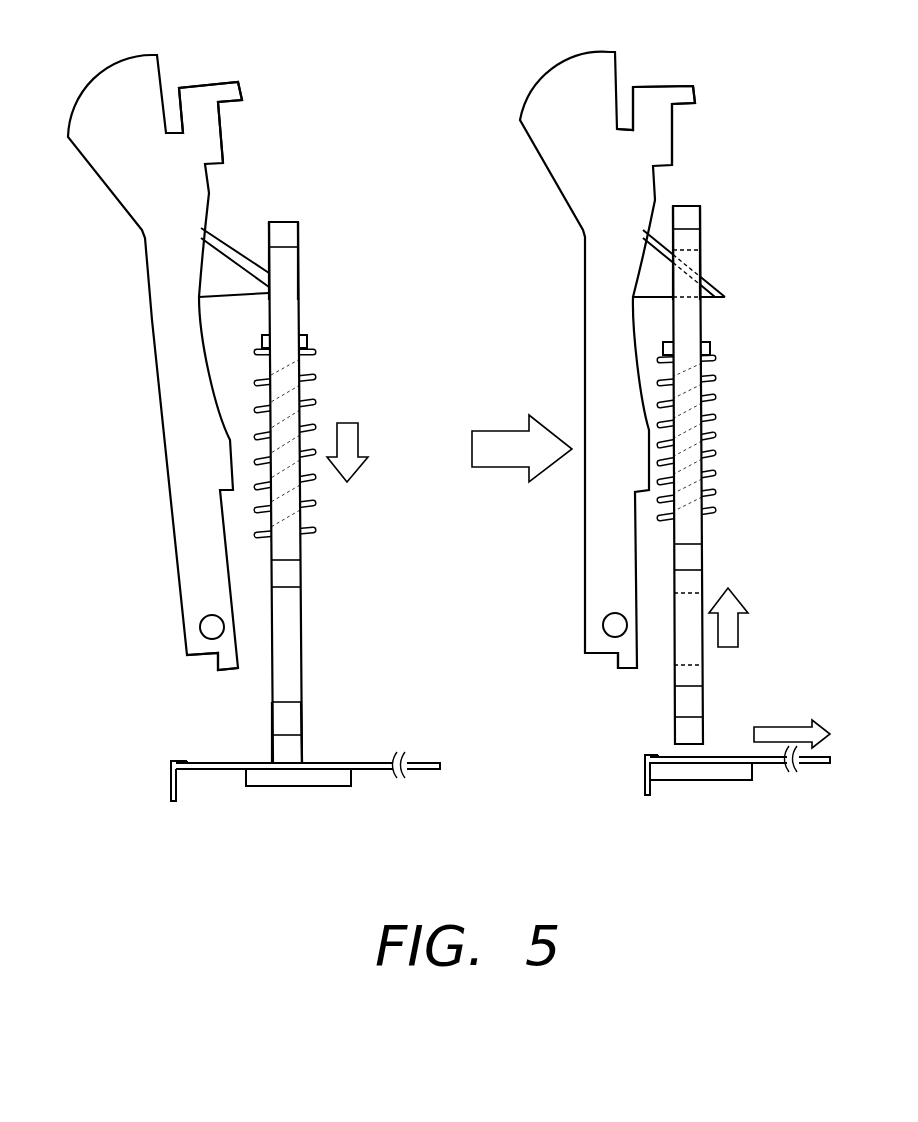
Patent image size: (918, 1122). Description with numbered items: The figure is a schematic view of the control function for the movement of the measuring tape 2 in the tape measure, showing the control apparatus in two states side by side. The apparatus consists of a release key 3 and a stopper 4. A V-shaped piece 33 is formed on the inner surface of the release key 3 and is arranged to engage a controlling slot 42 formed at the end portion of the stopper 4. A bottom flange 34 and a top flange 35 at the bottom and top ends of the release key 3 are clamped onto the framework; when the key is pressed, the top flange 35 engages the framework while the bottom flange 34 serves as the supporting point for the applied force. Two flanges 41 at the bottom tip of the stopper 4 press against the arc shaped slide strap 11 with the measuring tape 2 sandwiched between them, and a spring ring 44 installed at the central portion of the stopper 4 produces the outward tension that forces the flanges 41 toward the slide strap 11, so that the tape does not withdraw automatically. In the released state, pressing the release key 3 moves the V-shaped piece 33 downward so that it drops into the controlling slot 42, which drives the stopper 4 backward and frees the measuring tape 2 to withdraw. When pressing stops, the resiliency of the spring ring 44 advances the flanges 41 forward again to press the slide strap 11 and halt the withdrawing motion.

The measuring tape 2 is at (420, 765).
The release key 3 is at (126, 358).
The stopper 4 is at (338, 337).
The arc shaped slide strap 11 is at (298, 780).
The V-shaped piece 33 is at (230, 242).
The bottom flange 34 is at (225, 663).
The top flange 35 is at (210, 88).
The flanges 41 is at (303, 752).
The controlling slot 42 is at (298, 277).
The spring ring 44 is at (312, 427).